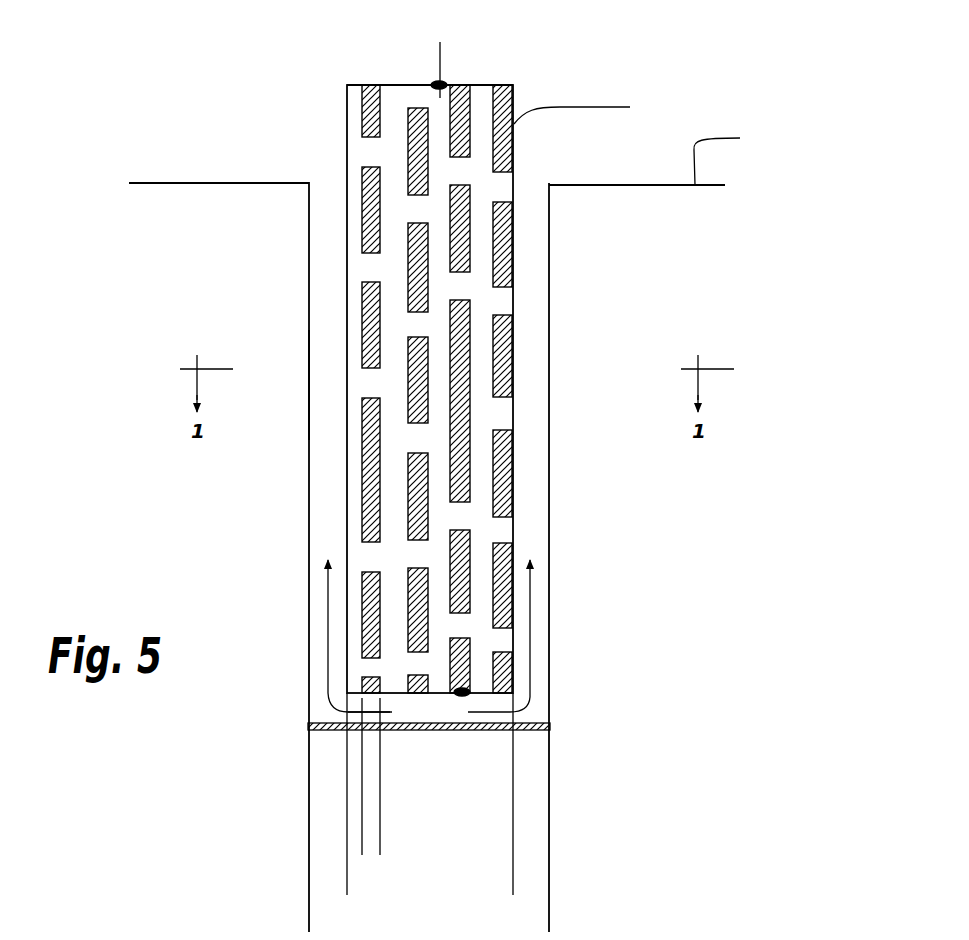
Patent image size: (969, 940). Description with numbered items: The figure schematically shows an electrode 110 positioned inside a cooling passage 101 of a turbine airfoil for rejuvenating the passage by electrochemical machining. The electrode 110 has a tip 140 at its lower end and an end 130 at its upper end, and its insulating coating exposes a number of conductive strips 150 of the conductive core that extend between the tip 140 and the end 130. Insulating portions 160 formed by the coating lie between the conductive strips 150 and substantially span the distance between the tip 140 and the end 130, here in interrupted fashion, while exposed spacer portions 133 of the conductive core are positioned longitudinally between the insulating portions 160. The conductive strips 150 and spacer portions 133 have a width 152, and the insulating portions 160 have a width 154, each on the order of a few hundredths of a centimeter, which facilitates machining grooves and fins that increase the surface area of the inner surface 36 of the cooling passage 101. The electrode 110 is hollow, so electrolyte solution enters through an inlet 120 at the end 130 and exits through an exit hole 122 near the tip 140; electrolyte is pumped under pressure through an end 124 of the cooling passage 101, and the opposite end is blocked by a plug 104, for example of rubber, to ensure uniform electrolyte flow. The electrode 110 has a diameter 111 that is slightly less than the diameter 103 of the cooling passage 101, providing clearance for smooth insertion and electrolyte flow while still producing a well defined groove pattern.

The inner surface 36 is at (310, 407).
The cooling passage 101 is at (550, 692).
The diameter of cooling passage 103 is at (547, 908).
The plug 104 is at (550, 727).
The electrode 110 is at (507, 530).
The diameter of electrode 111 is at (512, 872).
The inlet 120 is at (440, 80).
The exit hole 122 is at (462, 694).
The end of cooling passage 124 is at (537, 180).
The end 130 is at (482, 85).
The spacer portions 133 is at (366, 265).
The tip 140 is at (345, 712).
The conductive strips 150 is at (355, 466).
The width 152 is at (410, 780).
The width 154 is at (430, 832).
The insulating portions 160 is at (470, 612).